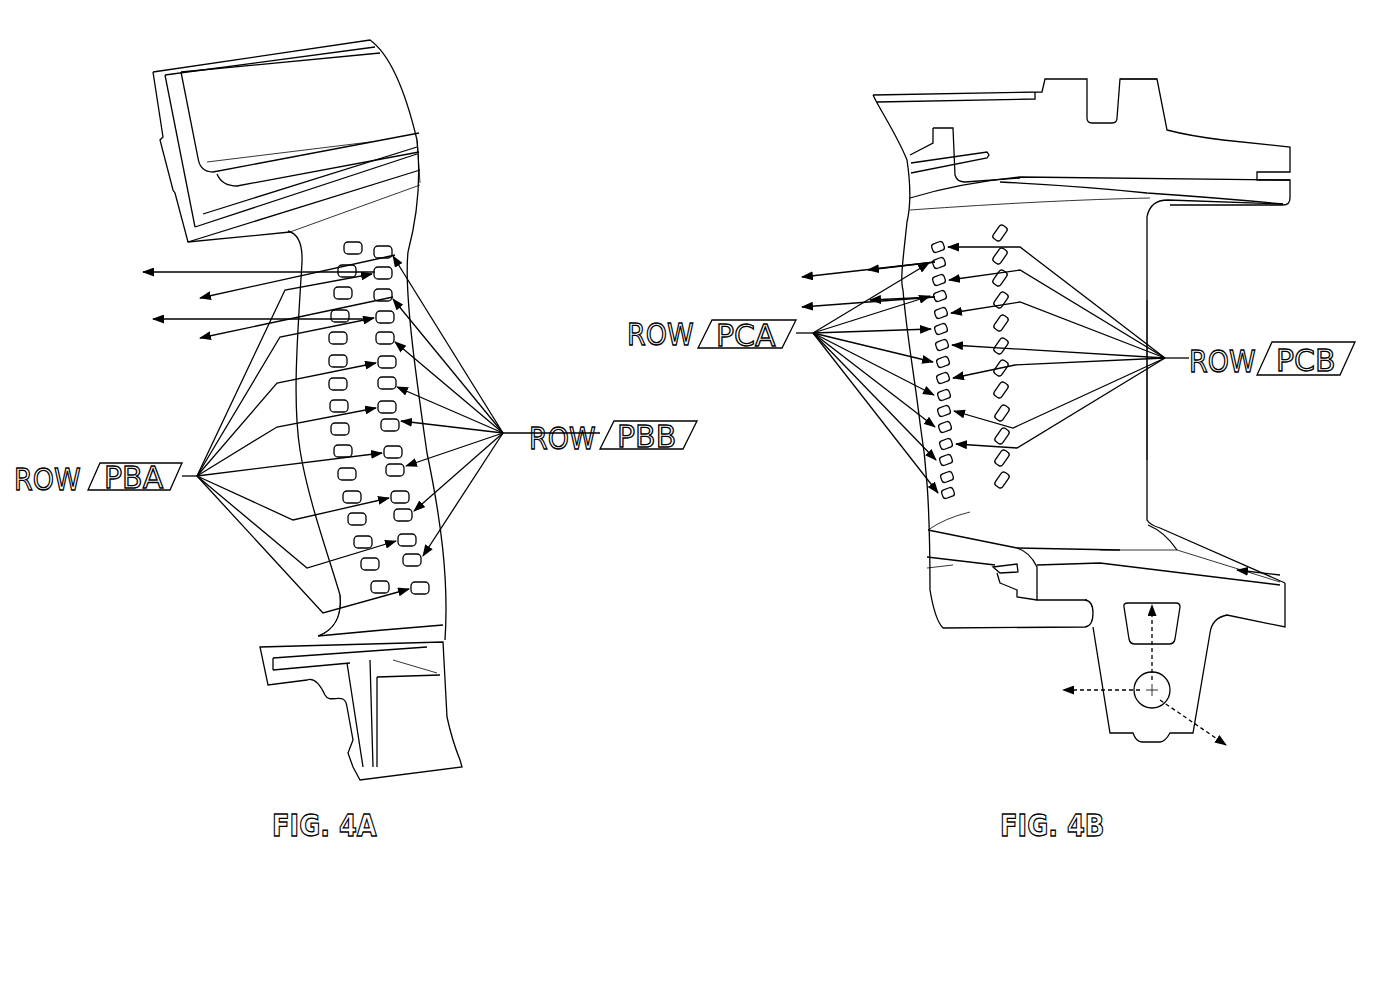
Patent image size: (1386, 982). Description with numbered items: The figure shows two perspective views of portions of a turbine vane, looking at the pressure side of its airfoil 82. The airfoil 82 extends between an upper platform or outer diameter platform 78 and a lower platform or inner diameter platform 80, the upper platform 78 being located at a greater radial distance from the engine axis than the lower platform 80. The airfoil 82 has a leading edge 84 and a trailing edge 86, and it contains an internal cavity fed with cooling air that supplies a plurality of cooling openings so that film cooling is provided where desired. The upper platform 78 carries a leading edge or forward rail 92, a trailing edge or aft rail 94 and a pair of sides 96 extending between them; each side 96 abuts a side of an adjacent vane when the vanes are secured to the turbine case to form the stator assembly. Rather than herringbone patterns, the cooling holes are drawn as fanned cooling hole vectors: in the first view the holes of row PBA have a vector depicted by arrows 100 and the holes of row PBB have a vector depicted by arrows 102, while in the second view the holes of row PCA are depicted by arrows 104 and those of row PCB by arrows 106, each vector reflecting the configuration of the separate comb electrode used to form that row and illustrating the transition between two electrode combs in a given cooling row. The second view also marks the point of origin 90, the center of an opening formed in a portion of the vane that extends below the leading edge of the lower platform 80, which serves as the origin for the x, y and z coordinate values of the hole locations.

In FIG. 4B, the upper platform or outer diameter platform 78 is at (1083, 148).
In FIG. 4A, the lower platform or inner diameter platform 80 is at (319, 711).
In FIG. 4B, the lower platform or inner diameter platform 80 is at (1192, 633).
In FIG. 4B, the airfoil 82 is at (989, 570).
In FIG. 4B, the leading edge 84 is at (1148, 380).
In FIG. 4A, the trailing edge 86 is at (294, 619).
In FIG. 4B, the point of origin 90 is at (1148, 672).
In FIG. 4B, the leading edge or forward rail 92 is at (1146, 82).
In FIG. 4A, the trailing edge or aft rail 94 is at (299, 144).
In FIG. 4A, the pair of sides 96 is at (452, 144).
In FIG. 4B, the pair of sides 96 is at (965, 112).
In FIG. 4A, the arrows 100 is at (253, 283).
In FIG. 4A, the arrows 102 is at (434, 397).
In FIG. 4B, the arrows 104 is at (841, 273).
In FIG. 4B, the arrows 106 is at (898, 348).